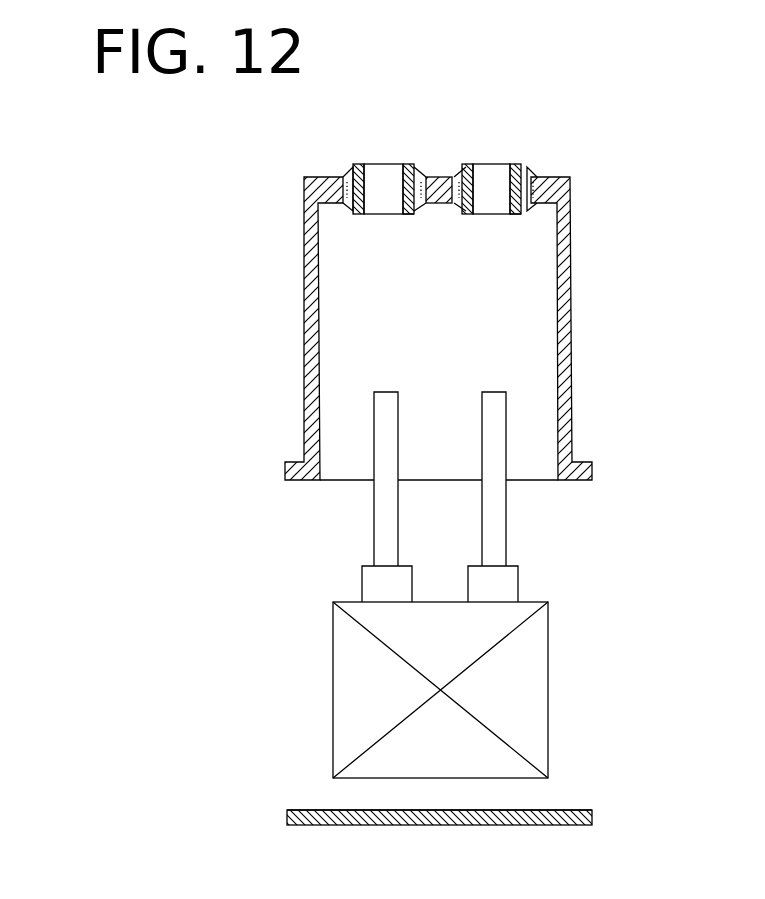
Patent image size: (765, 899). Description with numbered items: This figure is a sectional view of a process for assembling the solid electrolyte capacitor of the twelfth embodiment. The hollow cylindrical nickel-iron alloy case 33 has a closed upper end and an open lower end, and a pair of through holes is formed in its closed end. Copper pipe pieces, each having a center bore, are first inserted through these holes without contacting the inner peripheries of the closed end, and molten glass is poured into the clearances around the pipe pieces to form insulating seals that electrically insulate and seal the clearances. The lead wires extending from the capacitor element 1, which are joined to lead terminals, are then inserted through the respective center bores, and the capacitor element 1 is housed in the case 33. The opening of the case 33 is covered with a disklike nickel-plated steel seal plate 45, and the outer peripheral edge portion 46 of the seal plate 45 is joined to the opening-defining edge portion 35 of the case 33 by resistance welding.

The capacitor element 1 is at (546, 697).
The case 33 is at (573, 310).
The opening-defining edge portion 35 is at (582, 484).
The seal plate 45 is at (313, 810).
The outer peripheral edge portion 46 is at (580, 807).